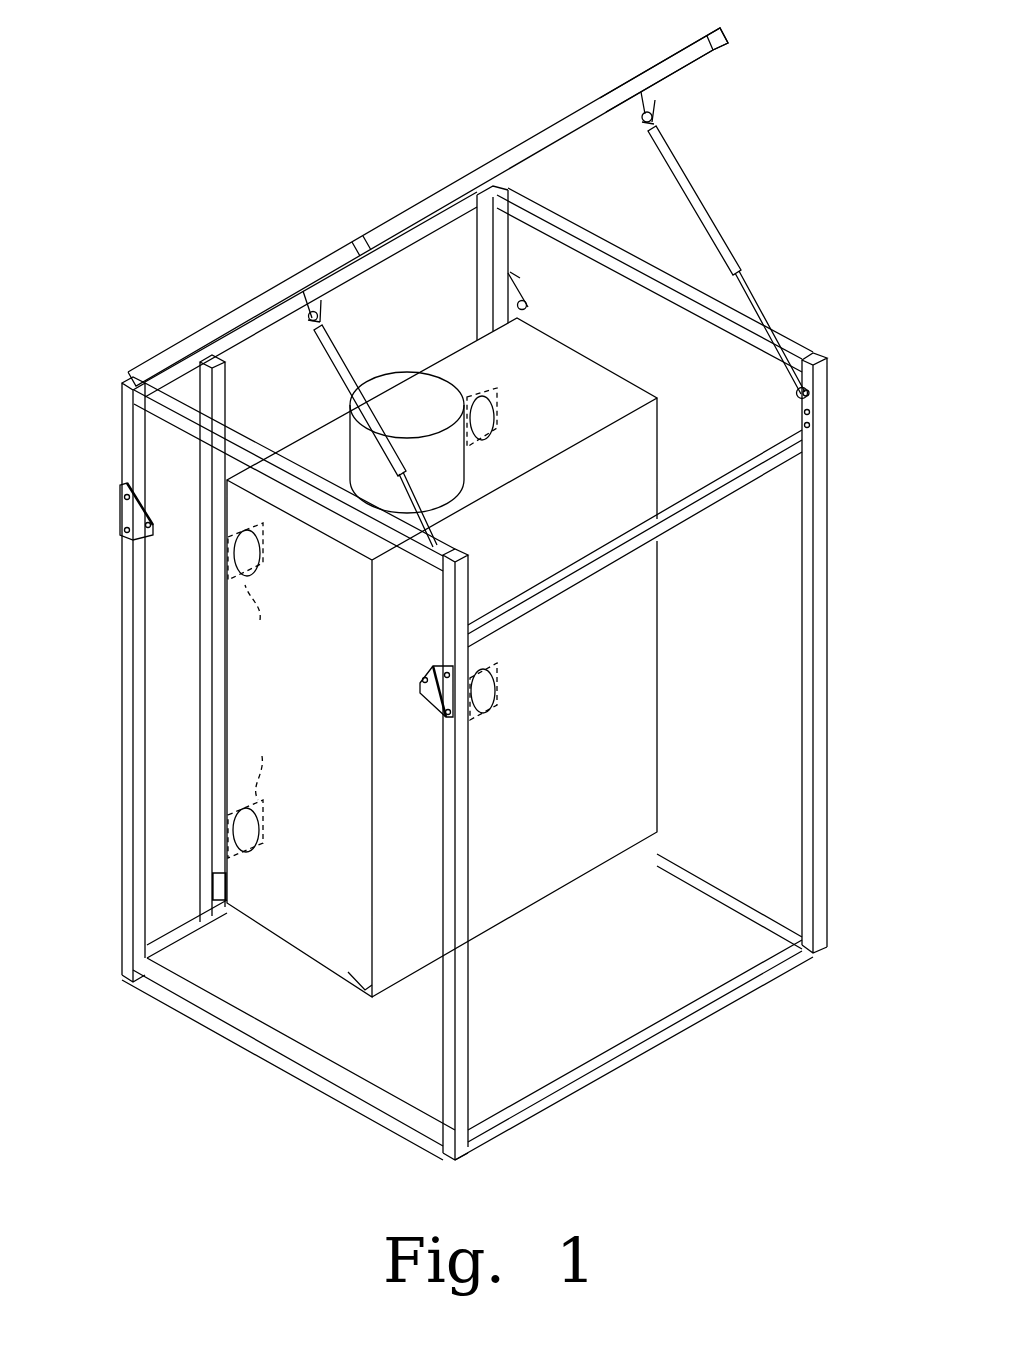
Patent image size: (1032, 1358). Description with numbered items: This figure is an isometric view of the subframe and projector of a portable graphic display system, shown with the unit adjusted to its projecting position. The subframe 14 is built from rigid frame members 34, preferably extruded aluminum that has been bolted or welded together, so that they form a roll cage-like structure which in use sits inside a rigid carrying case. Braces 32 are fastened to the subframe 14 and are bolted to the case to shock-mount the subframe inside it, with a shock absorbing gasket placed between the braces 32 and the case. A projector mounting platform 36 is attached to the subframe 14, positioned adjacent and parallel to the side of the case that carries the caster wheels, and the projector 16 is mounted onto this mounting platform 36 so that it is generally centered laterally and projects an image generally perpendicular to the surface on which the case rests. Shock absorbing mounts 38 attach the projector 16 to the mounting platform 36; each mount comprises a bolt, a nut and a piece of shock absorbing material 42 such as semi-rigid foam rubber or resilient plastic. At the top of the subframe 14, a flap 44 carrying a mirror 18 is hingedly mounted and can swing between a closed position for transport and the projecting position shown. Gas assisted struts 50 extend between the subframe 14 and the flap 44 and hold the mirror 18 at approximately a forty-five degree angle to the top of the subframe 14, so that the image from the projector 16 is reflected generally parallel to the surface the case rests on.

The subframe 14 is at (470, 673).
The projector 16 is at (658, 718).
The mirror 18 is at (428, 193).
The braces 32 is at (118, 500).
The frame members 34 is at (628, 252).
The projector mounting platform 36 is at (217, 630).
The shock absorbing mounts 38 is at (498, 418).
The shock absorbing material 42 is at (260, 692).
The flap 44 is at (666, 58).
The gas assisted struts 50 is at (346, 364).